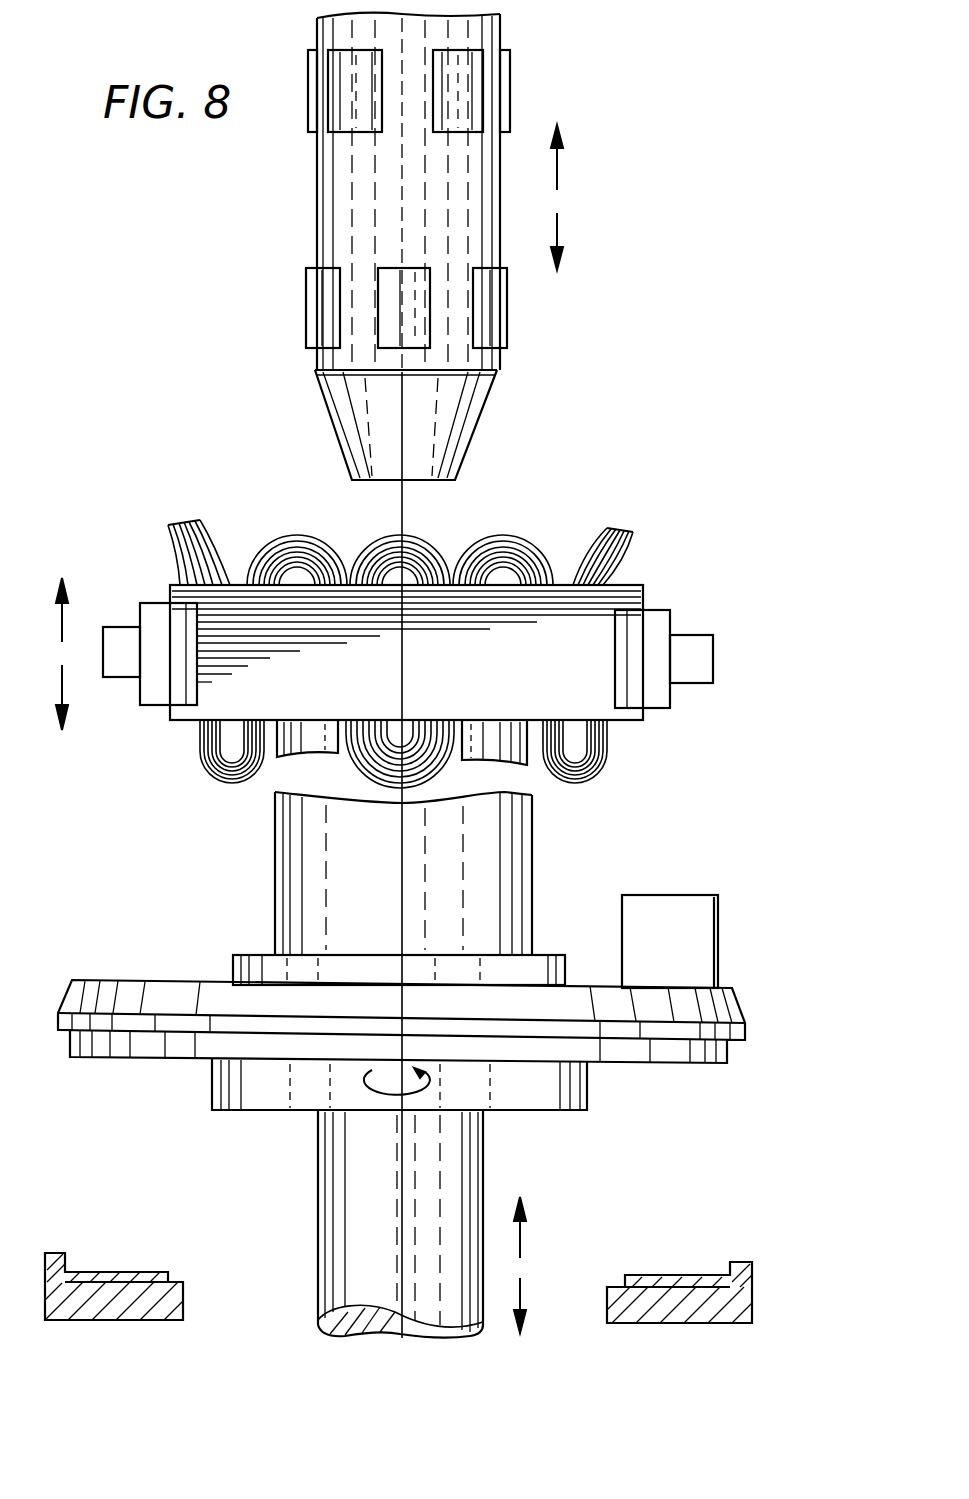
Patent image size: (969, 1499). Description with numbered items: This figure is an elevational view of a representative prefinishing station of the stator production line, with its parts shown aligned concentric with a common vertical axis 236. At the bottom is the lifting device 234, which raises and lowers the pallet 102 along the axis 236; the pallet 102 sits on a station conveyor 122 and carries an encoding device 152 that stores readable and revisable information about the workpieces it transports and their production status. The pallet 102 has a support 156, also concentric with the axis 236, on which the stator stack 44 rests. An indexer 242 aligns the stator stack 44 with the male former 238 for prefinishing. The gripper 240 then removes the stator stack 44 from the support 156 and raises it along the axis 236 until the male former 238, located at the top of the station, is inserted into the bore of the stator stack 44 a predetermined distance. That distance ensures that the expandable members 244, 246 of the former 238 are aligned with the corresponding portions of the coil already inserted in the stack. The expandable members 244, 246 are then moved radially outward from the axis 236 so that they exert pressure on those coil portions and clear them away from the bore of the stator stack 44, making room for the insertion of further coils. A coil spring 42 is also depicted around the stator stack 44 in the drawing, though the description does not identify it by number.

The coil spring 42 is at (632, 540).
The stator stack 44 is at (643, 602).
The pallet 102 is at (740, 1010).
The station conveyor 122 is at (110, 1272).
The encoding device 152 is at (718, 935).
The support 156 is at (533, 870).
The lifting device 234 is at (318, 1275).
The axis 236 is at (402, 918).
The male former 238 is at (318, 206).
The gripper 240 is at (672, 690).
The indexer 242 is at (212, 1082).
The expandable member 244 is at (306, 312).
The expandable member 246 is at (350, 118).